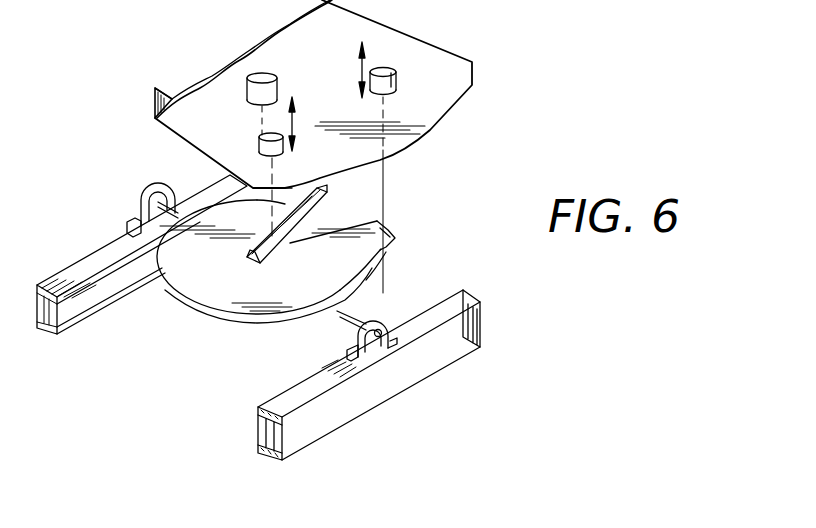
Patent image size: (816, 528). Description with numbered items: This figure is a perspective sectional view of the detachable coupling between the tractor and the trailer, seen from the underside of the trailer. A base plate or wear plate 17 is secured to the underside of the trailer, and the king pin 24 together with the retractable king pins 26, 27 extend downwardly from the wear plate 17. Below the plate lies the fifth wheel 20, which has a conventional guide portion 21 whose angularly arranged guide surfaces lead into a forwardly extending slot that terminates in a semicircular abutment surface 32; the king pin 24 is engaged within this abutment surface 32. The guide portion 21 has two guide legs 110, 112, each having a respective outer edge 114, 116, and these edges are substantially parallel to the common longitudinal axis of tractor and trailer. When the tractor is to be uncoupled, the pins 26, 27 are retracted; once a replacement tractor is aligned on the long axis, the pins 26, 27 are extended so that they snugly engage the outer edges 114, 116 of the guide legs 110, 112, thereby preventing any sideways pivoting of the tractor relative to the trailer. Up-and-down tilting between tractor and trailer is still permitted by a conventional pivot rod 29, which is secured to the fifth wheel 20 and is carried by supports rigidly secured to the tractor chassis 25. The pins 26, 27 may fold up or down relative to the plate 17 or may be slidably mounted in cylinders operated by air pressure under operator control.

The base plate or wear plate 17 is at (199, 94).
The king pin 24 is at (268, 75).
The retractable king pin 26 is at (260, 140).
The retractable king pin 27 is at (394, 80).
The outer edge 114 is at (287, 186).
The guide leg 110 is at (320, 193).
The guide leg 112 is at (389, 230).
The outer edge 116 is at (389, 251).
The semicircular abutment surface 32 is at (248, 262).
The guide portion 21 is at (303, 244).
The fifth wheel 20 is at (213, 318).
The pivot rod 29 is at (343, 322).
The chassis 25 is at (78, 320).